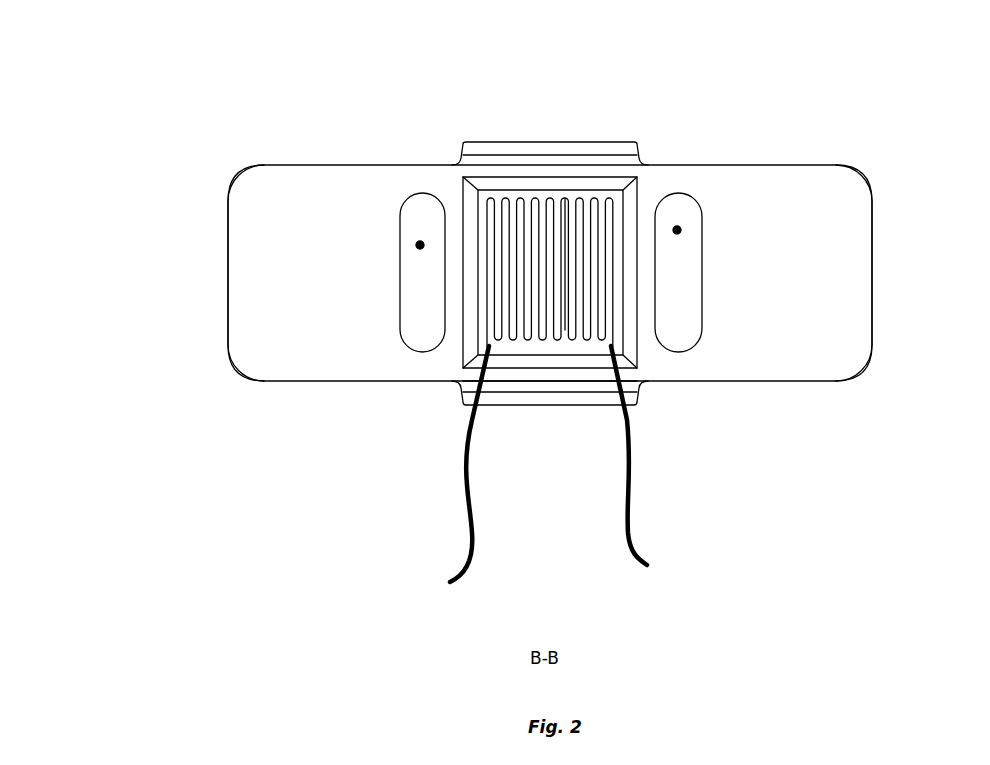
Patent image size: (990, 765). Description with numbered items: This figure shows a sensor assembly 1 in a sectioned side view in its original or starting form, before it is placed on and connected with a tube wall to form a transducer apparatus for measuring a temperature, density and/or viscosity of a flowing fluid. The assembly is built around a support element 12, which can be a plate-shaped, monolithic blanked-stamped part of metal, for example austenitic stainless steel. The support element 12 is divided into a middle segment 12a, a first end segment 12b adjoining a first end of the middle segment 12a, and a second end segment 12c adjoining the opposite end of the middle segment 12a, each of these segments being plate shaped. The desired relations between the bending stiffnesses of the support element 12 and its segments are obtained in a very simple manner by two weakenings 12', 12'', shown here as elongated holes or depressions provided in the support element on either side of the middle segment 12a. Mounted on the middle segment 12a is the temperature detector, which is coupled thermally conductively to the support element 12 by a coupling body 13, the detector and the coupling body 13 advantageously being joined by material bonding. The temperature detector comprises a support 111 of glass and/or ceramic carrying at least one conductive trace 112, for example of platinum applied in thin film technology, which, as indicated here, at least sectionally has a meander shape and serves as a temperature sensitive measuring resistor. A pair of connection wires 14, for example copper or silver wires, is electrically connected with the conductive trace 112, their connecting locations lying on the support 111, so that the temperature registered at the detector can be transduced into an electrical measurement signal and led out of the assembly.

The sensor assembly 1 is at (481, 100).
The support element 12 is at (550, 302).
The middle segment 12a is at (555, 375).
The first end segment 12b is at (258, 275).
The second end segment 12c is at (838, 242).
The weakening 12' is at (346, 212).
The weakening 12'' is at (706, 201).
The coupling body 13 is at (468, 218).
The support 111 is at (523, 345).
The conductive trace 112 is at (566, 205).
The connection wires 14 is at (647, 553).